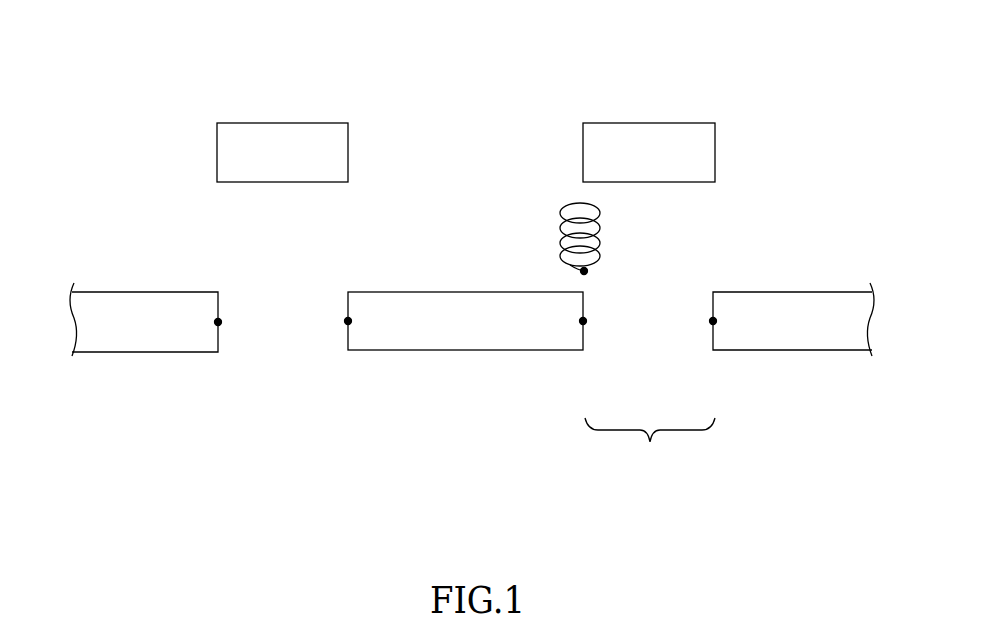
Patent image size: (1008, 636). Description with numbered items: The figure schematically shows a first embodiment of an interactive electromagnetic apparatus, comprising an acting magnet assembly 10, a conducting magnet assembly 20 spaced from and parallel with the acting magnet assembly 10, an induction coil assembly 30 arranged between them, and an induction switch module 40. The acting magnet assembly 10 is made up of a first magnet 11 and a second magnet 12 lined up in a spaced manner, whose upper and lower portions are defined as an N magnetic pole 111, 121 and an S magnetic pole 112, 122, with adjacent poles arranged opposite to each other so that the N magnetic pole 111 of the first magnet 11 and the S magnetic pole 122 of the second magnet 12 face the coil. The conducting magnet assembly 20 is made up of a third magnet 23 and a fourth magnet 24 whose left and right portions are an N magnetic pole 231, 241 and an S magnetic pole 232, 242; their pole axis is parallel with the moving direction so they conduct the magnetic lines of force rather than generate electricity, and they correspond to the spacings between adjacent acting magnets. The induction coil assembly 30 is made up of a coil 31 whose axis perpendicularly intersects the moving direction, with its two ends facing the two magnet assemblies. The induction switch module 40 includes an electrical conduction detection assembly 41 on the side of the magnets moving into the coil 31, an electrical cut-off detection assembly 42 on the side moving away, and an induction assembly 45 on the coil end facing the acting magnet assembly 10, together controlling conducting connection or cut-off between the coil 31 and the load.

The acting magnet assembly 10 is at (128, 447).
The first magnet 11 is at (413, 352).
The N magnetic pole 111 is at (465, 292).
The S magnetic pole 112 is at (463, 352).
The second magnet 12 is at (155, 352).
The N magnetic pole 121 is at (98, 352).
The S magnetic pole 122 is at (97, 292).
The conducting magnet assembly 20 is at (226, 92).
The third magnet 23 is at (284, 123).
The N magnetic pole 231 is at (217, 152).
The S magnetic pole 232 is at (348, 152).
The fourth magnet 24 is at (650, 123).
The N magnetic pole 241 is at (715, 152).
The S magnetic pole 242 is at (583, 150).
The induction coil assembly 30 is at (525, 222).
The coil 31 is at (600, 235).
The induction switch module 40 is at (469, 400).
The electrical conduction detection assembly 41 is at (218, 322).
The electrical cut-off detection assembly 42 is at (348, 321).
The induction assembly 45 is at (584, 271).